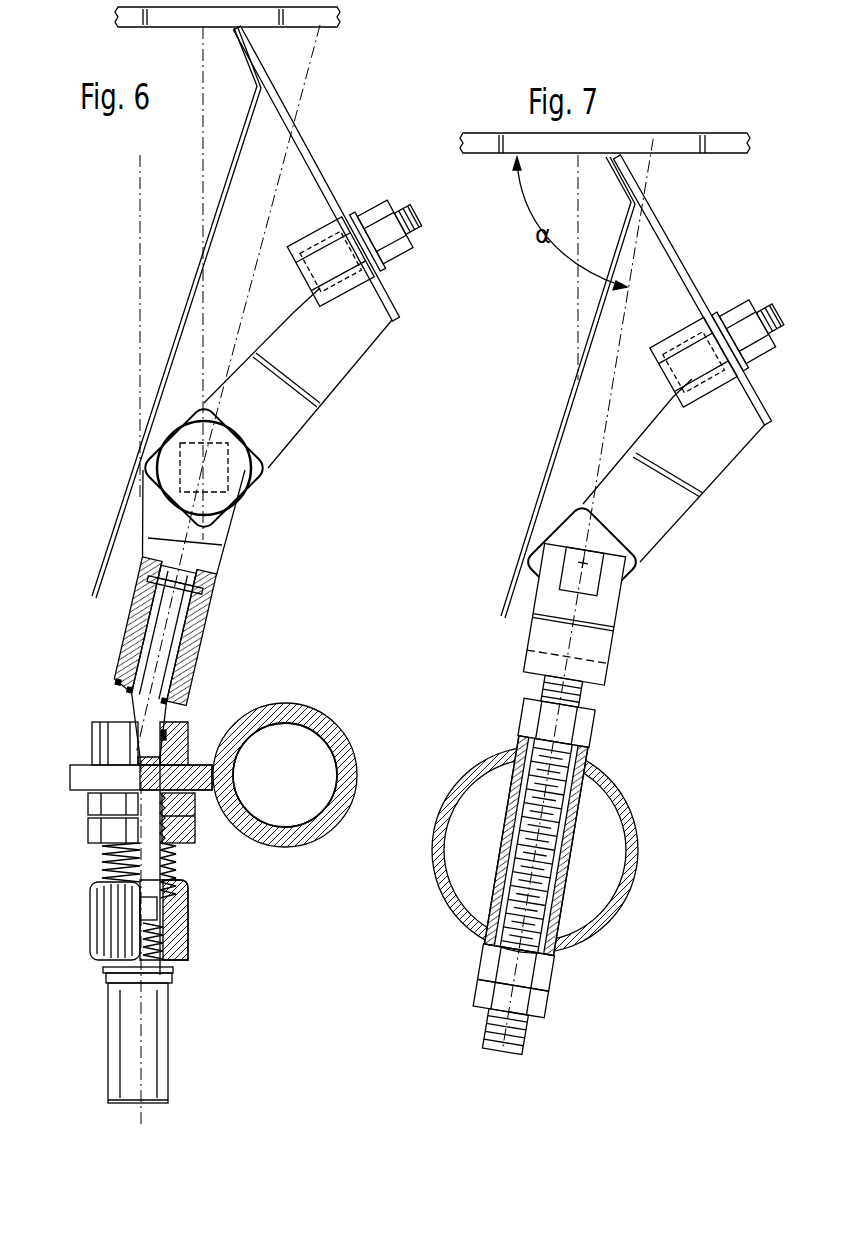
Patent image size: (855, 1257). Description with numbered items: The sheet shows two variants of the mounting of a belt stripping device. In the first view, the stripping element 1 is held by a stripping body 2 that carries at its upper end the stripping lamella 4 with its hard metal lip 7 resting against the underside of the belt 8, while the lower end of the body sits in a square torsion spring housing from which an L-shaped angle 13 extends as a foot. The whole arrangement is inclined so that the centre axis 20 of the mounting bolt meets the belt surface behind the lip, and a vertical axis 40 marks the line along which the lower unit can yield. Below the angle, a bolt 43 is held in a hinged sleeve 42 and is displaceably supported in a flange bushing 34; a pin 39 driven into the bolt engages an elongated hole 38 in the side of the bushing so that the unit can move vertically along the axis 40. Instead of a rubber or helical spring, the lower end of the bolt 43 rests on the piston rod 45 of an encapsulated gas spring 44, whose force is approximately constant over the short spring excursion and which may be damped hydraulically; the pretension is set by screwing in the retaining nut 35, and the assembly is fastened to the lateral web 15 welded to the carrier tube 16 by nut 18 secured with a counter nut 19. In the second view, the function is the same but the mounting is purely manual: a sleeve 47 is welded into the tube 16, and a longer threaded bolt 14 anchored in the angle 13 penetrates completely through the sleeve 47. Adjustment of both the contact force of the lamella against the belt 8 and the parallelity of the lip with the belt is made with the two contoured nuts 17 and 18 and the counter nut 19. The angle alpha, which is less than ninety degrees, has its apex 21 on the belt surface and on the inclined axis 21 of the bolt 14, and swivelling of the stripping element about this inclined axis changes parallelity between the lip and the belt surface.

In FIG. 7, the stripping element 1 is at (647, 499).
In FIG. 7, the stripping body 2 is at (667, 527).
In FIG. 7, the stripping lamella 4 is at (673, 254).
In FIG. 7, the hard metal lip 7 is at (604, 160).
In FIG. 7, the belt 8 is at (723, 154).
In FIG. 7, the L-shaped angle 13 is at (598, 643).
In FIG. 7, the threaded bolt 14 is at (485, 1020).
In FIG. 6, the web 15 is at (84, 775).
In FIG. 6, the tube 16 is at (287, 706).
In FIG. 7, the tube 16 is at (463, 777).
In FIG. 7, the contoured nut 17 is at (527, 717).
In FIG. 6, the contoured nut 18 is at (90, 806).
In FIG. 7, the contoured nut 18 is at (483, 963).
In FIG. 6, the counter nut 19 is at (90, 831).
In FIG. 7, the counter nut 19 is at (480, 988).
In FIG. 6, the centre axis 20 is at (312, 52).
In FIG. 7, the apex 21 is at (653, 157).
In FIG. 6, the flange bushing 34 is at (117, 725).
In FIG. 6, the retaining nut 35 is at (98, 902).
In FIG. 6, the elongated hole 38 is at (192, 810).
In FIG. 6, the pin 39 is at (185, 752).
In FIG. 6, the axis 40 is at (138, 177).
In FIG. 6, the hinged sleeve 42 is at (210, 618).
In FIG. 6, the bolt 43 is at (170, 632).
In FIG. 6, the encapsulated gas spring 44 is at (125, 1037).
In FIG. 6, the piston rod 45 is at (177, 912).
In FIG. 7, the sleeve 47 is at (503, 823).